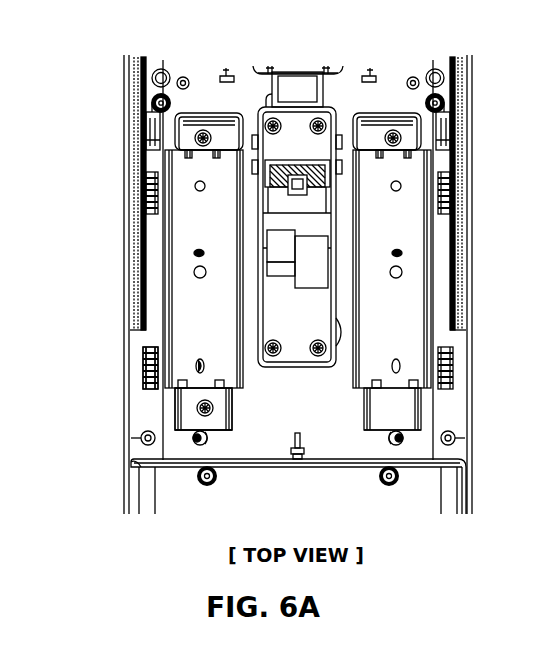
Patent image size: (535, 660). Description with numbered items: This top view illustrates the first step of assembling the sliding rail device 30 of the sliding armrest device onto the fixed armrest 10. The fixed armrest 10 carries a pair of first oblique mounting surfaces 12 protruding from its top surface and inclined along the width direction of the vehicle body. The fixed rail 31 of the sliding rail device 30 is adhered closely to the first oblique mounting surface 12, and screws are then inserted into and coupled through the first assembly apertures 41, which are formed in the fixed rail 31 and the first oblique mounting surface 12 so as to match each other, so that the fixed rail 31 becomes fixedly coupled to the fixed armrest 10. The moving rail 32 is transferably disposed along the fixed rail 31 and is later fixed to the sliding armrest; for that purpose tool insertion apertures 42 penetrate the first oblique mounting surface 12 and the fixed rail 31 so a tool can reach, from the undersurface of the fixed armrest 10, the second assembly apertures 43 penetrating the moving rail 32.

The fixed armrest 10 is at (153, 280).
The first oblique mounting surface 12 is at (152, 247).
The sliding rail device 30 is at (148, 235).
The fixed rail 31 is at (192, 410).
The moving rail 32 is at (182, 323).
The first assembly aperture 41 is at (213, 413).
The tool insertion aperture 42 is at (160, 393).
The second assembly aperture 43 is at (193, 364).